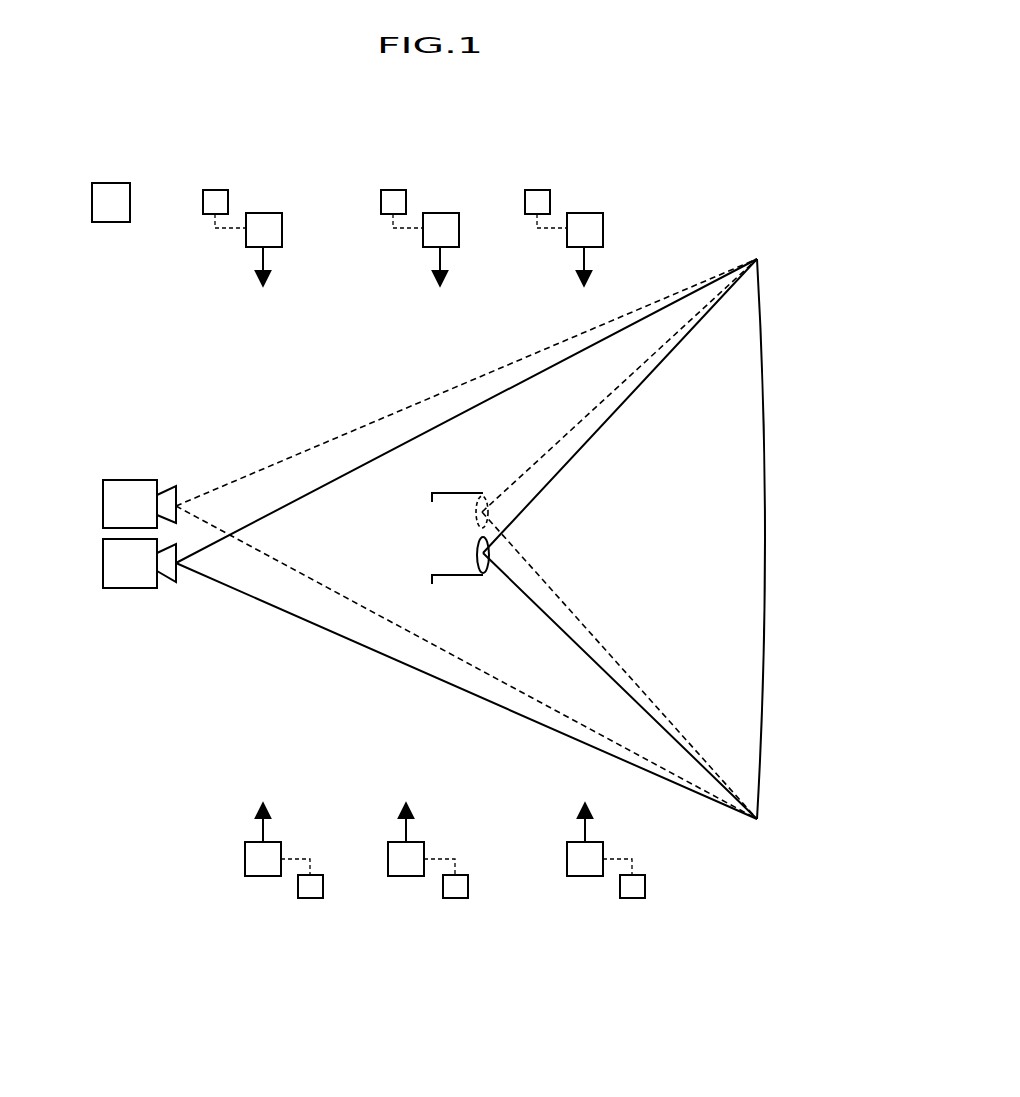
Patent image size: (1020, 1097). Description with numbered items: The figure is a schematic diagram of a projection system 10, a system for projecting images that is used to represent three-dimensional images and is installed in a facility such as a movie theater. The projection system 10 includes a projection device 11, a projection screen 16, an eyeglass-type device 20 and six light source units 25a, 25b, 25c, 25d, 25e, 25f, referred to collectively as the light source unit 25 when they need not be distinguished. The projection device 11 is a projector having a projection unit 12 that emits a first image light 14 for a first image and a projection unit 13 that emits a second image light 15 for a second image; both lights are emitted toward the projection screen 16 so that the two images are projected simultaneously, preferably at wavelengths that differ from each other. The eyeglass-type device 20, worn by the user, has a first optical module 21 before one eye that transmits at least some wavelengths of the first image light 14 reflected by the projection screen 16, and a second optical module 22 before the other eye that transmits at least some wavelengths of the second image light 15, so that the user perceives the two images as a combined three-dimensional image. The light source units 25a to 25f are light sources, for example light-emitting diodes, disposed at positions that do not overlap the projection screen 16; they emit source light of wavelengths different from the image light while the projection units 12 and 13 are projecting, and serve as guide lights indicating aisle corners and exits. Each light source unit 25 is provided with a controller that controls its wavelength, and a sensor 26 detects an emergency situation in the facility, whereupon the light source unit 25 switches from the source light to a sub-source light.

The projection system 10 is at (220, 352).
The projection device 11 is at (76, 447).
The projection unit 12 is at (131, 588).
The projection unit 13 is at (130, 480).
The first image light 14 is at (318, 610).
The second image light 15 is at (318, 457).
The projection screen 16 is at (765, 537).
The eyeglass-type device 20 is at (452, 512).
The first optical module 21 is at (482, 575).
The second optical module 22 is at (483, 493).
The light source unit 25 is at (424, 546).
The light source unit 25a is at (265, 213).
The light source unit 25b is at (442, 213).
The light source unit 25c is at (586, 213).
The light source unit 25d is at (263, 876).
The light source unit 25e is at (406, 876).
The light source unit 25f is at (585, 876).
The sensor 26 is at (110, 183).